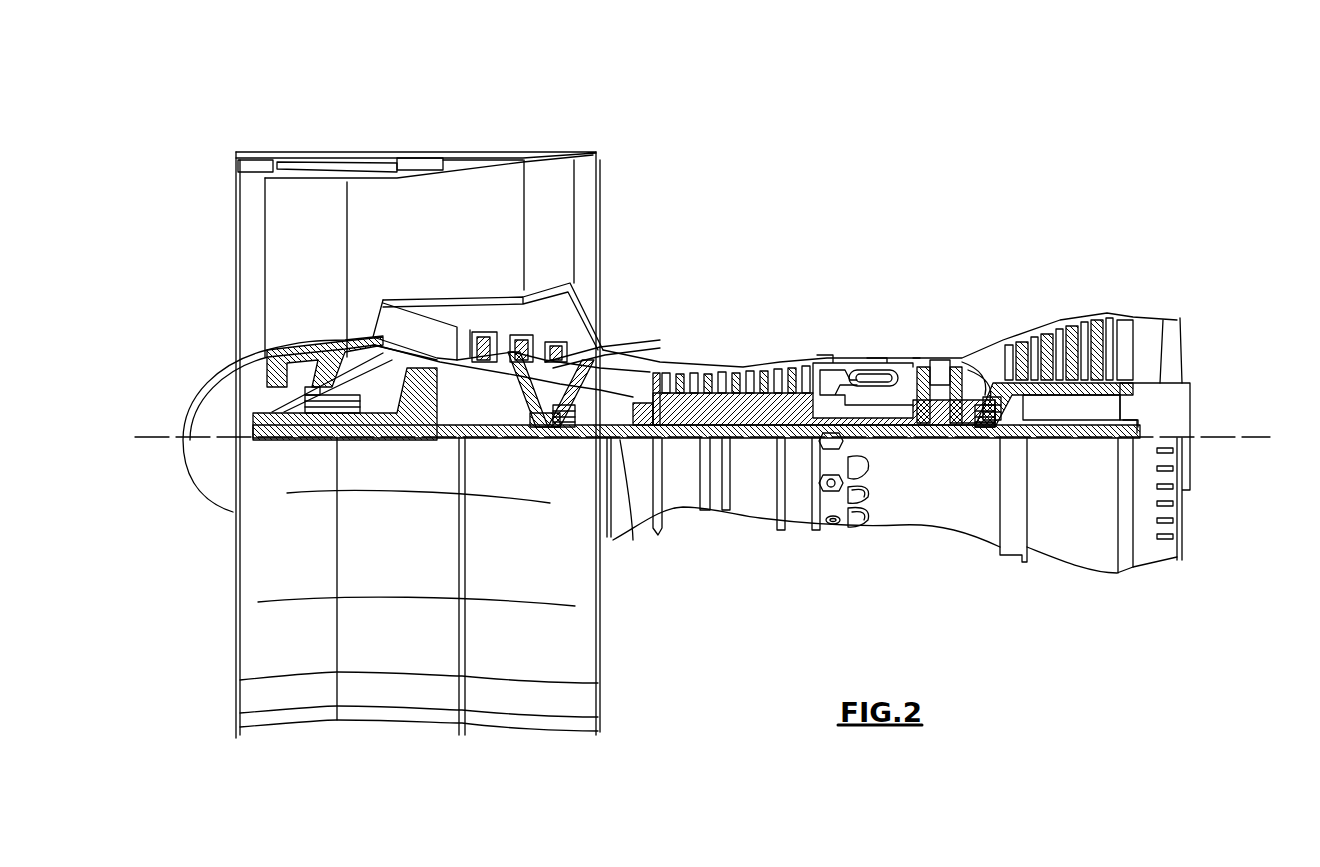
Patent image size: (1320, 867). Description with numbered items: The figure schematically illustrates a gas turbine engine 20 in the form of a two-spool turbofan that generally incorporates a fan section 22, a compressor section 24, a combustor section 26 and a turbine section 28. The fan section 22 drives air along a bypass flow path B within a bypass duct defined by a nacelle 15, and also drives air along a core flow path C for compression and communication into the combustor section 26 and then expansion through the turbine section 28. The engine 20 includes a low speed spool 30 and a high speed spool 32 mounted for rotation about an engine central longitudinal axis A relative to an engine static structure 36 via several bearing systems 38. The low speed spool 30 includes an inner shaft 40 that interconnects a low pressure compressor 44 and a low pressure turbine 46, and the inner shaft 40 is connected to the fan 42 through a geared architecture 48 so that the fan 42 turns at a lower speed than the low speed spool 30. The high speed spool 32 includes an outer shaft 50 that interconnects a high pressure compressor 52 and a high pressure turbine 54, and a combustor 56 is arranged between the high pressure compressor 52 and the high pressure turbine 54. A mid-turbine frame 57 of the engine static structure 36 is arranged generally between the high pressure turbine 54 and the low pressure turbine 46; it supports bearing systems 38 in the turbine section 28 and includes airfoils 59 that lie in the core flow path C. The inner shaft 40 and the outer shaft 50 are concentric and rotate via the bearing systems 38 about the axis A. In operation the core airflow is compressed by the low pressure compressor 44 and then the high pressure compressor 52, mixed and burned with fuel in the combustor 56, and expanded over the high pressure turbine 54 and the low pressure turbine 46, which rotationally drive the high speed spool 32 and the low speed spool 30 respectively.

The gas turbine engine 20 is at (878, 206).
The fan section 22 is at (343, 150).
The nacelle 15 is at (412, 160).
The compressor section 24 is at (652, 347).
The combustor section 26 is at (874, 340).
The turbine section 28 is at (1051, 336).
The low speed spool 30 is at (757, 442).
The high speed spool 32 is at (800, 390).
The engine static structure 36 is at (798, 525).
The bearing systems 38 is at (555, 412).
The inner shaft 40 is at (625, 445).
The fan 42 is at (322, 285).
The low pressure compressor 44 is at (523, 347).
The low pressure turbine 46 is at (1066, 315).
The geared architecture 48 is at (428, 418).
The outer shaft 50 is at (880, 440).
The high pressure compressor 52 is at (733, 407).
The high pressure turbine 54 is at (938, 370).
The combustor 56 is at (872, 380).
The mid-turbine frame 57 is at (982, 347).
The airfoils 59 is at (1005, 398).
The engine central longitudinal axis A is at (1268, 437).
The bypass flow path B is at (385, 228).
The core flow path C is at (425, 337).